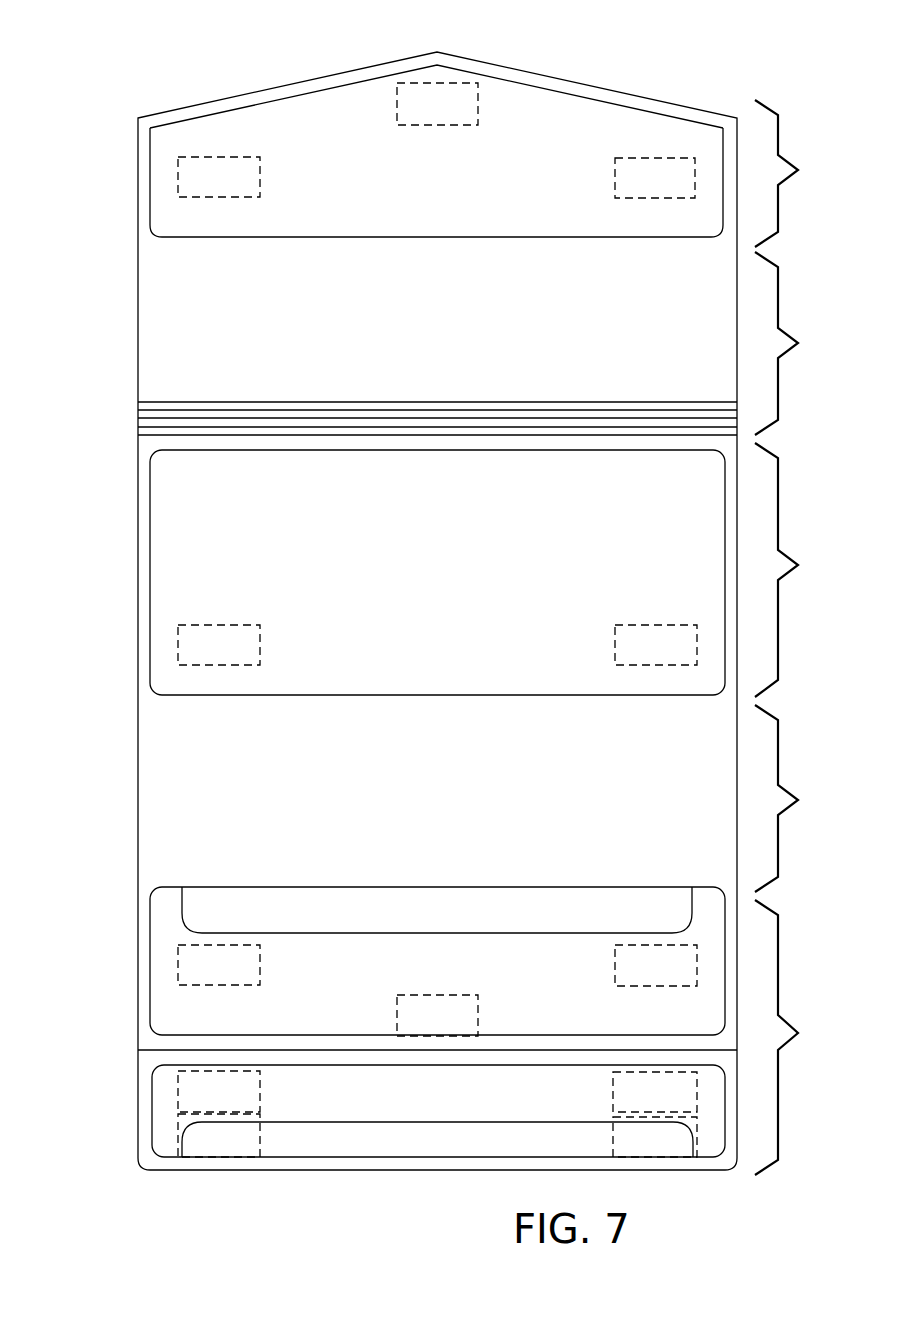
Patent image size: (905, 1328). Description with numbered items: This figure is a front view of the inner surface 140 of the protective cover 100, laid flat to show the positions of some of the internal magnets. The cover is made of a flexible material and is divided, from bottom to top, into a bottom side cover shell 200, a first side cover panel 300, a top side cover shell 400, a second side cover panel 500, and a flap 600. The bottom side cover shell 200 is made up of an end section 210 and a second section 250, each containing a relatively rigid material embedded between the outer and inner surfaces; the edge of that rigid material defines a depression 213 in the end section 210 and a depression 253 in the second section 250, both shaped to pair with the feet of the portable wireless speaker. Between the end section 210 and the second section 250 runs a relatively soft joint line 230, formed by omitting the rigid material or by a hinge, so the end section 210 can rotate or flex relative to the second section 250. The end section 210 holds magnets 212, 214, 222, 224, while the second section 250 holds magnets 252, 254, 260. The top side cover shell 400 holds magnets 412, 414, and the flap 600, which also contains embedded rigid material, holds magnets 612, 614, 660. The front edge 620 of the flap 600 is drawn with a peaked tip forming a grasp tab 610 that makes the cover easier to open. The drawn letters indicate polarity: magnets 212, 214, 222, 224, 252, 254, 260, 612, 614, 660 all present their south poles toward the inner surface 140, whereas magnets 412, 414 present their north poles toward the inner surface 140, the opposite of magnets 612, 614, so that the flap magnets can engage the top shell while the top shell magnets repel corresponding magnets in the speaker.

The protective cover 100 is at (155, 108).
The inner surface 140 is at (180, 364).
The bottom side cover shell 200 is at (802, 1037).
The end section 210 is at (163, 1102).
The magnet 212 is at (262, 1133).
The depression 213 is at (405, 1145).
The magnet 214 is at (612, 1133).
The magnet 222 is at (262, 1078).
The magnet 224 is at (612, 1082).
The joint line 230 is at (200, 1050).
The second section 250 is at (163, 915).
The magnet 252 is at (262, 950).
The depression 253 is at (277, 897).
The magnet 254 is at (631, 986).
The magnet 260 is at (458, 993).
The first side cover panel 300 is at (802, 798).
The top side cover shell 400 is at (500, 570).
The magnet 412 is at (190, 665).
The magnet 414 is at (633, 665).
The second side cover panel 500 is at (802, 343).
The flap 600 is at (802, 173).
The grasp tab 610 is at (437, 52).
The magnet 612 is at (243, 197).
The magnet 614 is at (627, 198).
The front edge 620 is at (286, 84).
The magnet 660 is at (413, 125).